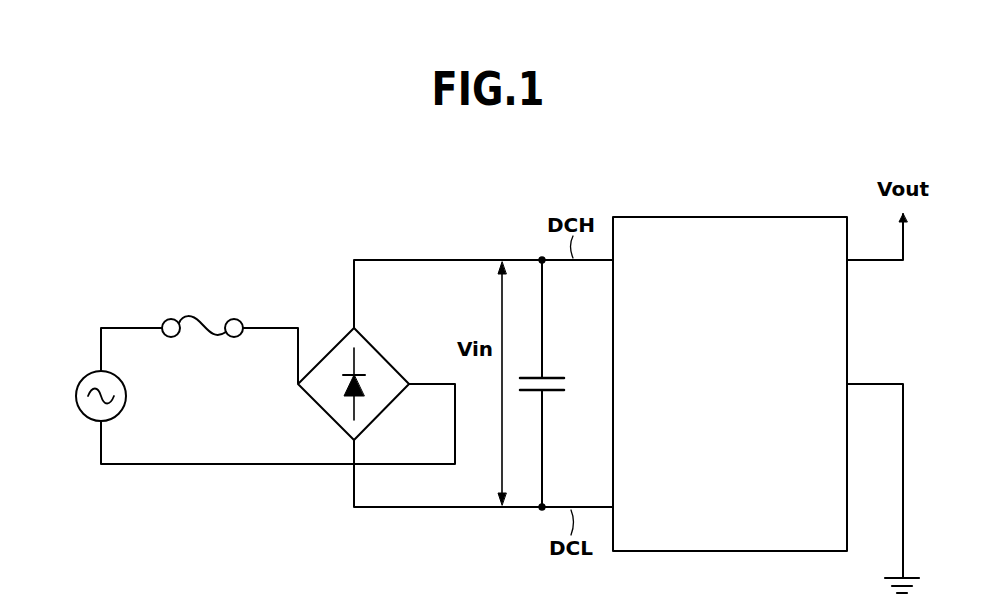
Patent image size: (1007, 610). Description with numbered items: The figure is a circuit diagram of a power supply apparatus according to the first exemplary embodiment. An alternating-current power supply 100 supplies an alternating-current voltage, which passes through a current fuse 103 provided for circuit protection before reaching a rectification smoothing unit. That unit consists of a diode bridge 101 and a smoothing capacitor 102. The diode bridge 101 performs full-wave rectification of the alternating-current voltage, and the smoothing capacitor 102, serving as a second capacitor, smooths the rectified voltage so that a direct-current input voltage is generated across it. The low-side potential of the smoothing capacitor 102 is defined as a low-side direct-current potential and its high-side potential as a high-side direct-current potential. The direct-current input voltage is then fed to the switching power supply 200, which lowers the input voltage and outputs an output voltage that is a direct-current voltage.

The alternating-current power supply 100 is at (83, 374).
The diode bridge 101 is at (340, 341).
The smoothing capacitor 102 is at (562, 386).
The current fuse 103 is at (195, 318).
The switching power supply 200 is at (735, 216).